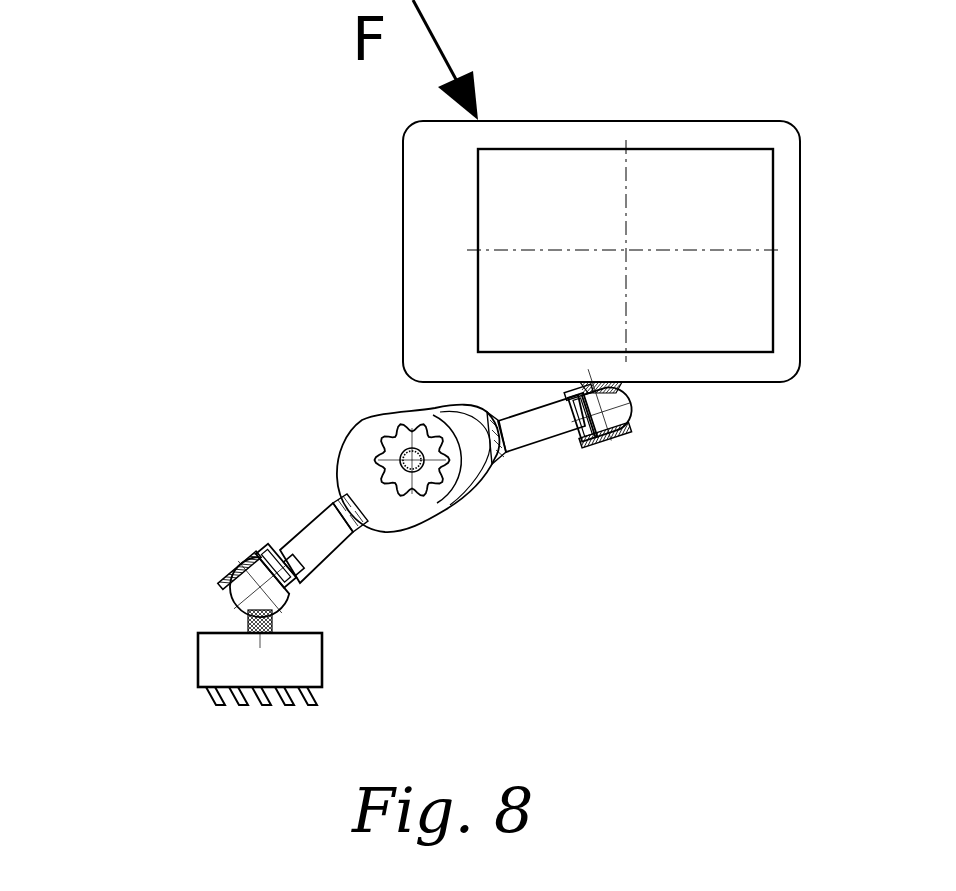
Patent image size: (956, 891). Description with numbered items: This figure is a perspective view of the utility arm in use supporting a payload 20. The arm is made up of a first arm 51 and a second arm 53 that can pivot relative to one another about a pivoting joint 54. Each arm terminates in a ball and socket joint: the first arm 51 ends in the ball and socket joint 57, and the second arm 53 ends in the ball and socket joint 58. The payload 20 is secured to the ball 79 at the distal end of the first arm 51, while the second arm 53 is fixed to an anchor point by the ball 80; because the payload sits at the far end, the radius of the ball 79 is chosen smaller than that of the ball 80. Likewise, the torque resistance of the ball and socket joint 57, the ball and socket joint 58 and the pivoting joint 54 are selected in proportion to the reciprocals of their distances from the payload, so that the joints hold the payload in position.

The display monitor 20 is at (420, 213).
The first arm 51 is at (530, 450).
The second arm 53 is at (328, 550).
The pivoting joint 54 is at (380, 432).
The ball and socket joint 57 is at (608, 423).
The ball and socket joint 58 is at (235, 568).
The ball 79 is at (612, 407).
The ball 80 is at (253, 602).